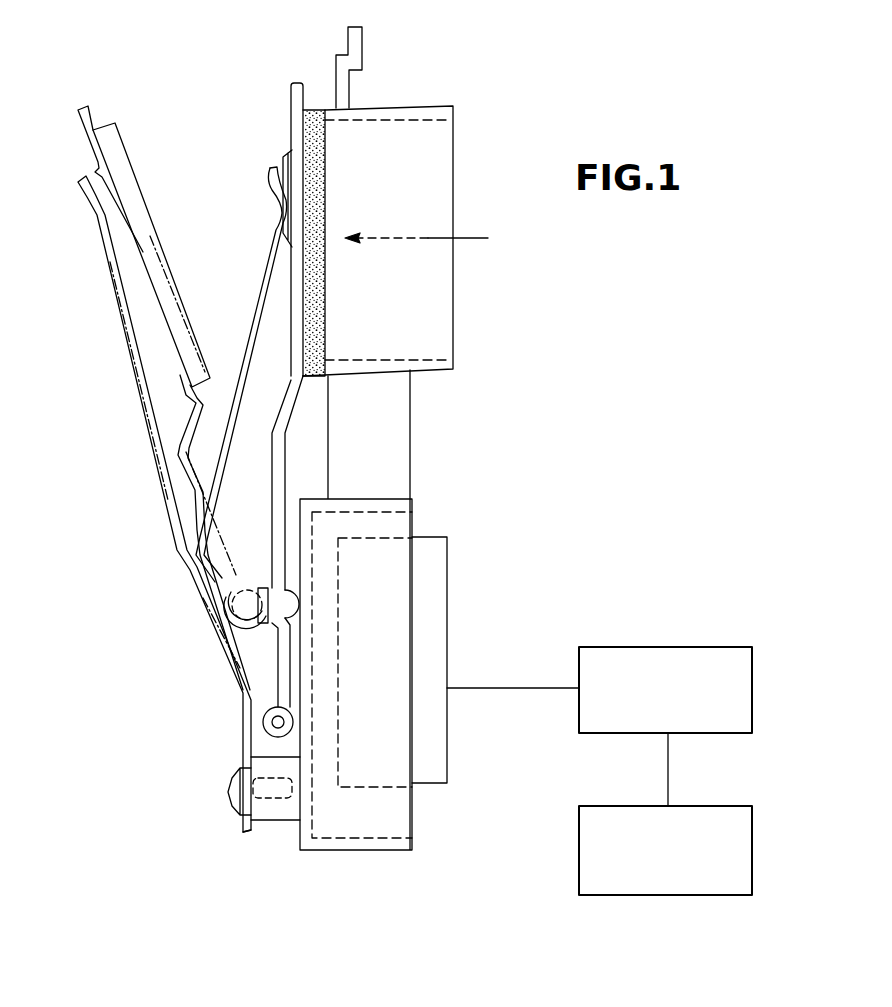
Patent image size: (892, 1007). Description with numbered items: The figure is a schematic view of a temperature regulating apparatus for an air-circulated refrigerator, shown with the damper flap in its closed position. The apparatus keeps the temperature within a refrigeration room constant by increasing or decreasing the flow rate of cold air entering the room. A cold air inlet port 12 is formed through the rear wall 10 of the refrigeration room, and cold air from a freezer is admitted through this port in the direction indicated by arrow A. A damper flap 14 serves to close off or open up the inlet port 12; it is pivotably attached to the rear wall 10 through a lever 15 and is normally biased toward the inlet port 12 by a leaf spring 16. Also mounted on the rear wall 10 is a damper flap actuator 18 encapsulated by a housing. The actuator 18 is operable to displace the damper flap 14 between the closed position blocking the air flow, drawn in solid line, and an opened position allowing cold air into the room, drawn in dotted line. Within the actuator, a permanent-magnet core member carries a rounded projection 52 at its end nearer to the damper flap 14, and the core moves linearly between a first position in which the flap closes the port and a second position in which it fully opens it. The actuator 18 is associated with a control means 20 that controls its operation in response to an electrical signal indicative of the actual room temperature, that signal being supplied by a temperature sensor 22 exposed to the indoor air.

The rear wall 10 is at (390, 447).
The cold air inlet port 12 is at (437, 302).
The damper flap 14 is at (307, 123).
The lever 15 is at (273, 477).
The leaf spring 16 is at (223, 407).
The damper flap actuator 18 is at (445, 587).
The control means 20 is at (620, 657).
The temperature sensor 22 is at (620, 822).
The rounded projection 52 is at (277, 620).
The arrow A is at (425, 239).